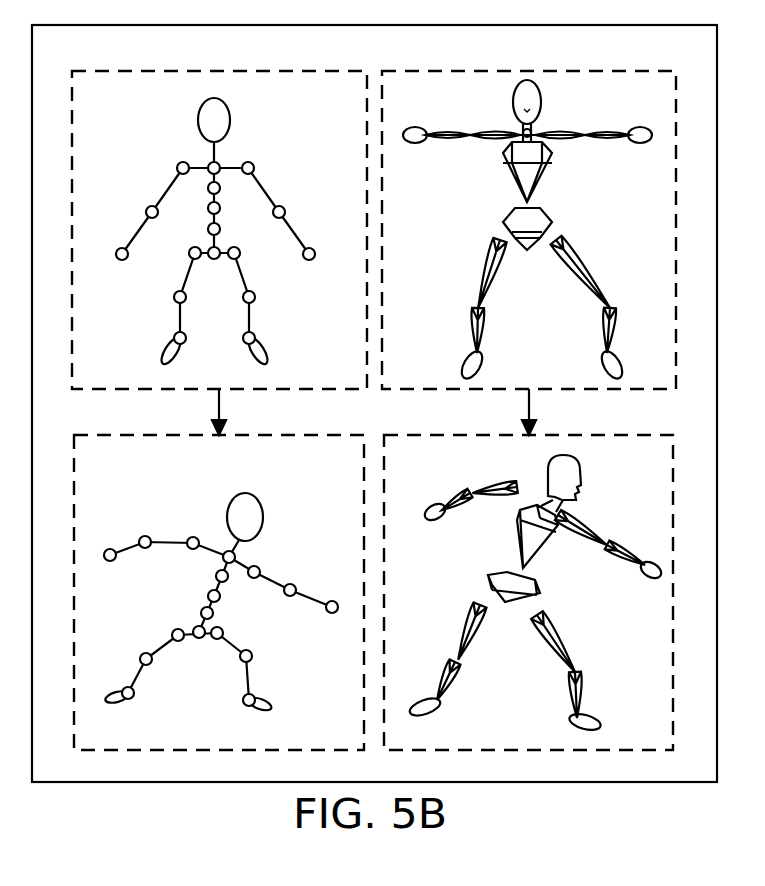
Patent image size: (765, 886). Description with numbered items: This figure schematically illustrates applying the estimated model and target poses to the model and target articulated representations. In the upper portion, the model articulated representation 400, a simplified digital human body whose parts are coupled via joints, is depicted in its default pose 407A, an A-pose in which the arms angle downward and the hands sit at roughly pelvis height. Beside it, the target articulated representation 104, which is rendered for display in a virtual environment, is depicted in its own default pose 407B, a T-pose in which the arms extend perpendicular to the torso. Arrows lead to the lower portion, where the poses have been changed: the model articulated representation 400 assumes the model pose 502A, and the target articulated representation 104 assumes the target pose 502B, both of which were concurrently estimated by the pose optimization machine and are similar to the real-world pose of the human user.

The model articulated representation 400 is at (127, 71).
The target articulated representation 104 is at (435, 71).
The default pose 407A is at (181, 142).
The default pose 407B is at (499, 106).
The model pose 502A is at (211, 504).
The target pose 502B is at (528, 469).